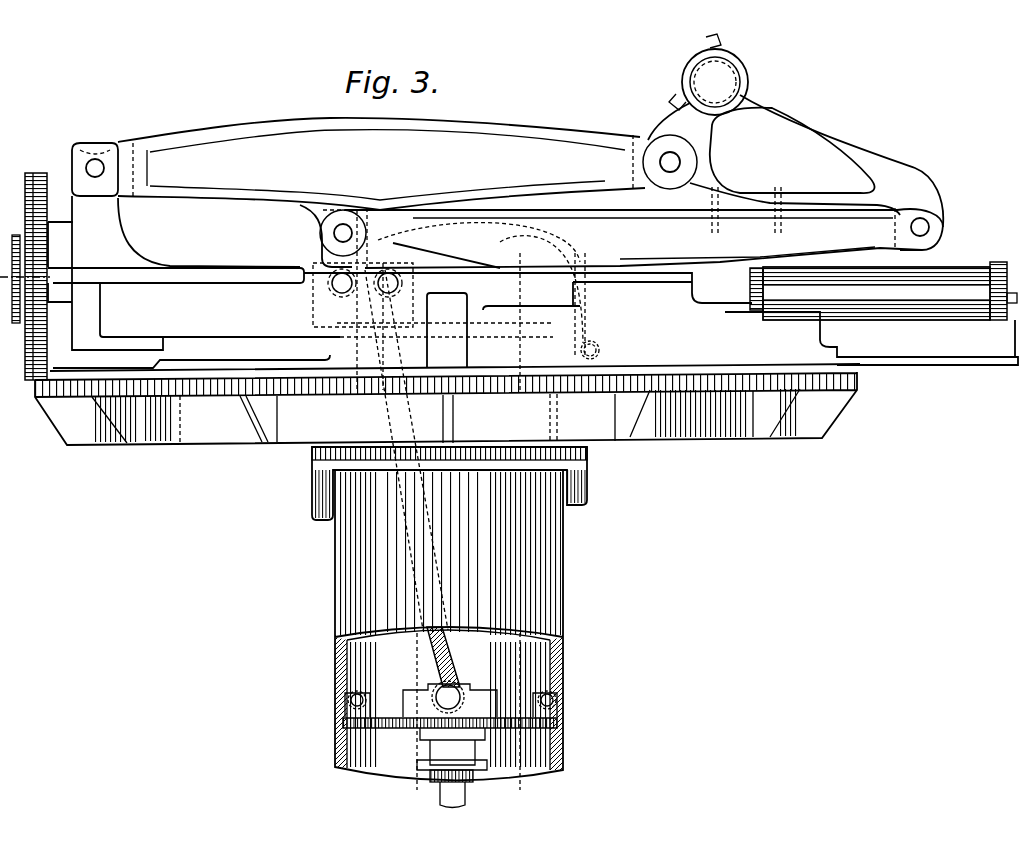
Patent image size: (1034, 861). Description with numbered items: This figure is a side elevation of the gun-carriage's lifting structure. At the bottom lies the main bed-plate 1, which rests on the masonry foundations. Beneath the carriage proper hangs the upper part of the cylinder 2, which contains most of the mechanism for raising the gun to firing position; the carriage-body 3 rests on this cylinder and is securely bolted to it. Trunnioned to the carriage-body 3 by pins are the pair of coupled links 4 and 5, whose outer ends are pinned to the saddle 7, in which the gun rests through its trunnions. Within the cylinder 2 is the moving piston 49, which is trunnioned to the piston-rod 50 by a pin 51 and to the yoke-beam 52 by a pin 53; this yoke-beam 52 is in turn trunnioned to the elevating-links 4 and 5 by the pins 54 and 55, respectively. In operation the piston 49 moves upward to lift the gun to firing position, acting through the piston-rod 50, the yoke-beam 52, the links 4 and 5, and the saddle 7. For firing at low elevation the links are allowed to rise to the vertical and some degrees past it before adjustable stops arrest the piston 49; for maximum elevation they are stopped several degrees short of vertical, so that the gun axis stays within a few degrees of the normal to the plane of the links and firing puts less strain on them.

The main bed-plate 1 is at (833, 403).
The cylinder 2 is at (563, 652).
The carriage-body 3 is at (509, 281).
The coupled link 4 is at (376, 164).
The coupled link 5 is at (631, 227).
The saddle 7 is at (793, 142).
The piston 49 is at (380, 737).
The piston-rod 50 is at (453, 640).
The pin 51 is at (467, 686).
The yoke-beam 52 is at (466, 275).
The pin 53 is at (392, 278).
The pin 54 is at (333, 293).
The pin 55 is at (602, 351).